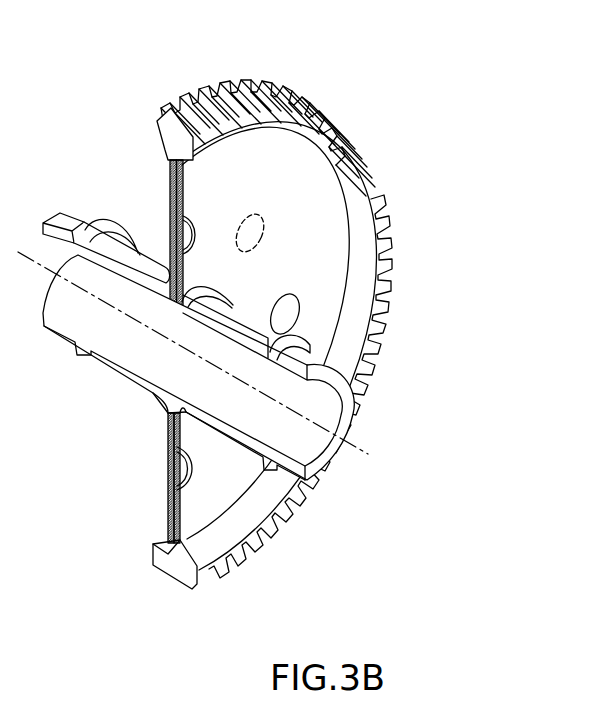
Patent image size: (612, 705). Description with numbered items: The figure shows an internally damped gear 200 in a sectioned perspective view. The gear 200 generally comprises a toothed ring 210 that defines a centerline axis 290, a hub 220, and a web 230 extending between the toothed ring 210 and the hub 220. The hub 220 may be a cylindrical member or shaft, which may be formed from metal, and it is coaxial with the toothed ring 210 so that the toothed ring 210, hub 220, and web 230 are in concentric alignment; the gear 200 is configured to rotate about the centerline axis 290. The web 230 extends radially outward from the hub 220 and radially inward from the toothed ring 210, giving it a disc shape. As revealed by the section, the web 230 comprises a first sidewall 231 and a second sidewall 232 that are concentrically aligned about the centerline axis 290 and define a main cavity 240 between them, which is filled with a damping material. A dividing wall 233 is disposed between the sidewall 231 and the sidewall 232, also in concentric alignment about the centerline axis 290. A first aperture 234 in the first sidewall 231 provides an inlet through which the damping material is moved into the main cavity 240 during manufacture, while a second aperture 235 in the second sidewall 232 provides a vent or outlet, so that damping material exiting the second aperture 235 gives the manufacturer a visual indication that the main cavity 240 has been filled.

The gear 200 is at (432, 92).
The toothed ring 210 is at (157, 121).
The hub 220 is at (157, 396).
The web 230 is at (323, 265).
The sidewall 231 is at (221, 565).
The sidewall 232 is at (170, 502).
The dividing wall 233 is at (175, 527).
The first aperture 234 is at (183, 230).
The second aperture 235 is at (172, 244).
The main cavity 240 is at (158, 190).
The centerline axis 290 is at (358, 452).